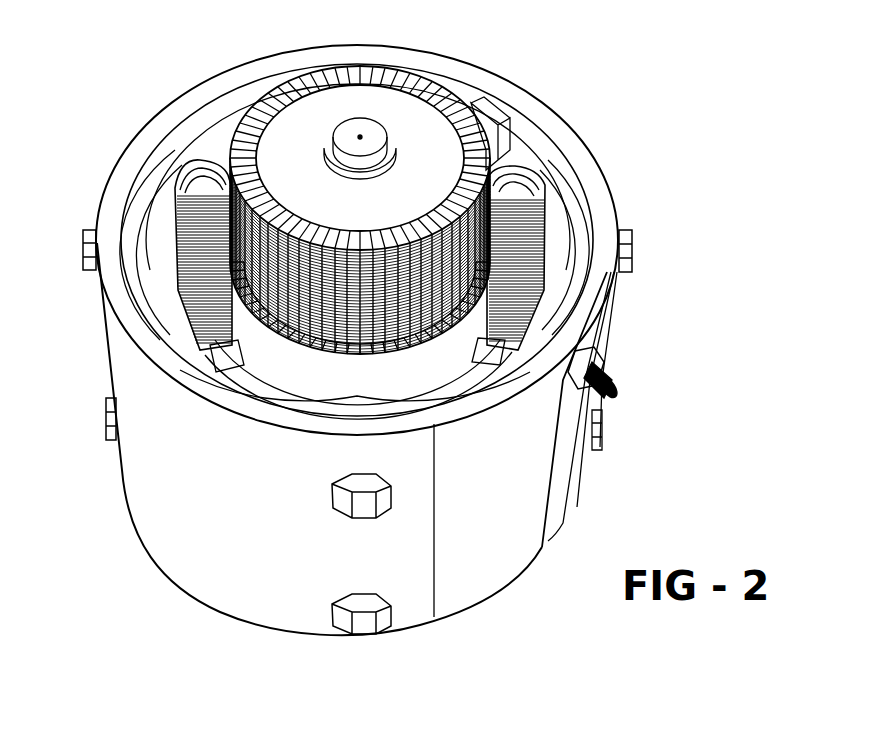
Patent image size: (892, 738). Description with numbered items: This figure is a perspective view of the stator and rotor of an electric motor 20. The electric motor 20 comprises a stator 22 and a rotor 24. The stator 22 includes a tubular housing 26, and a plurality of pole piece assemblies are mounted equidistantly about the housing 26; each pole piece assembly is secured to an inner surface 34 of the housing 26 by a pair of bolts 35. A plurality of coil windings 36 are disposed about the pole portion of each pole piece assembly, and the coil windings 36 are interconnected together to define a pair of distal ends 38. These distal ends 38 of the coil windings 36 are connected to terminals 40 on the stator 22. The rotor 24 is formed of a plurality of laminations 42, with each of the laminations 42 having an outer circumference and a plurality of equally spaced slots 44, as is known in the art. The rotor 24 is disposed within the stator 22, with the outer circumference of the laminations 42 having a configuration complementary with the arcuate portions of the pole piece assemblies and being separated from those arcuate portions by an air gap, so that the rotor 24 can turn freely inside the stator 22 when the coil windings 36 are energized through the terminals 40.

The electric motor 20 is at (376, 318).
The stator 22 is at (162, 516).
The rotor 24 is at (411, 126).
The tubular housing 26 is at (125, 173).
The inner surface 34 is at (534, 140).
The bolts 35 is at (635, 256).
The coil windings 36 is at (157, 273).
The distal ends 38 is at (562, 282).
The terminals 40 is at (623, 390).
The laminations 42 is at (408, 358).
The slots 44 is at (207, 186).